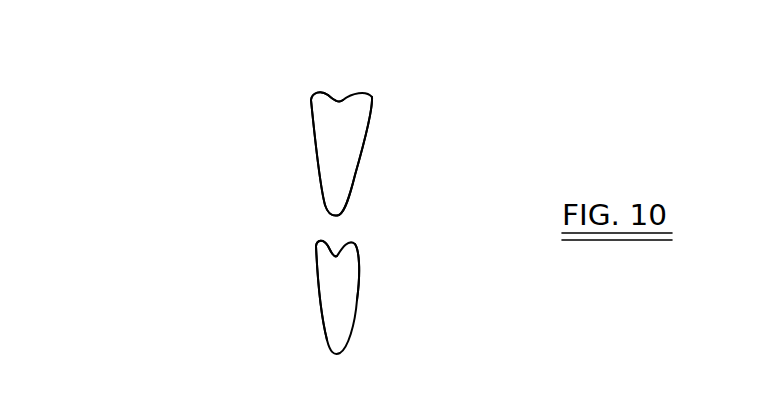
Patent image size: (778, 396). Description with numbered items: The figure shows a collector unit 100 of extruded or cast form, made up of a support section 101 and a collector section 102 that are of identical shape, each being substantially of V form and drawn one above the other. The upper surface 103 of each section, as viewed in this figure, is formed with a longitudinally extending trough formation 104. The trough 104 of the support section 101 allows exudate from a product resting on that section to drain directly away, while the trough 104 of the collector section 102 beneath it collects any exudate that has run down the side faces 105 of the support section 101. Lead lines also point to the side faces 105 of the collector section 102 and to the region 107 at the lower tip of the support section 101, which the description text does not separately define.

The collector unit 100 is at (175, 233).
The support section 101 is at (296, 139).
The collector section 102 is at (301, 309).
The upper surface 103 is at (322, 92).
The trough formation 104 is at (338, 92).
The side faces 105 is at (363, 165).
The tip end of petal member 107 is at (347, 220).